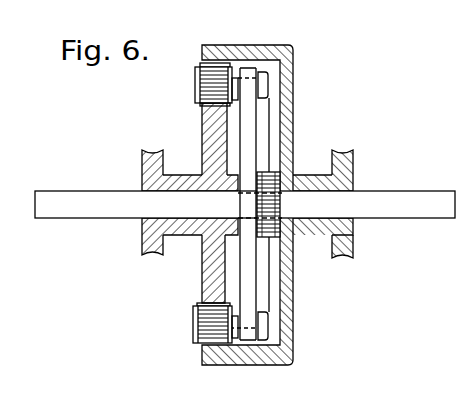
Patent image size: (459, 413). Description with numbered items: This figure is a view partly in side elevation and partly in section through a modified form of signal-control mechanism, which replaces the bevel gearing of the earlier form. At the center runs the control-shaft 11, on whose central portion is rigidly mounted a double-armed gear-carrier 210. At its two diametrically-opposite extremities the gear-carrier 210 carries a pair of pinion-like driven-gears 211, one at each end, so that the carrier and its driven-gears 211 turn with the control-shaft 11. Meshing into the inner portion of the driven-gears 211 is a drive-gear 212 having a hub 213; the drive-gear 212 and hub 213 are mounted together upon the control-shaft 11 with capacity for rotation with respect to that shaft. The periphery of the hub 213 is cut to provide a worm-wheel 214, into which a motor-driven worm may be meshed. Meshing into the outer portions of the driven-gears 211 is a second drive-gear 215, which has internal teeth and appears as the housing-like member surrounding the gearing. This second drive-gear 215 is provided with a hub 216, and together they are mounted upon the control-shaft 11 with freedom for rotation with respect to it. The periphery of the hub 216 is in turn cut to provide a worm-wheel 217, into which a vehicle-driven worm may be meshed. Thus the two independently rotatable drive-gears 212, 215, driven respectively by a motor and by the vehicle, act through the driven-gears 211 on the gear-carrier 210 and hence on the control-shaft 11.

The control-shaft 11 is at (427, 199).
The double-armed gear-carrier 210 is at (250, 128).
The pinion-like driven-gear 211 is at (207, 84).
The drive-gear 212 is at (207, 126).
The hub 213 is at (184, 235).
The worm-wheel 214 is at (152, 257).
The second drive-gear 215 is at (203, 52).
The hub 216 is at (308, 237).
The worm-wheel 217 is at (351, 258).